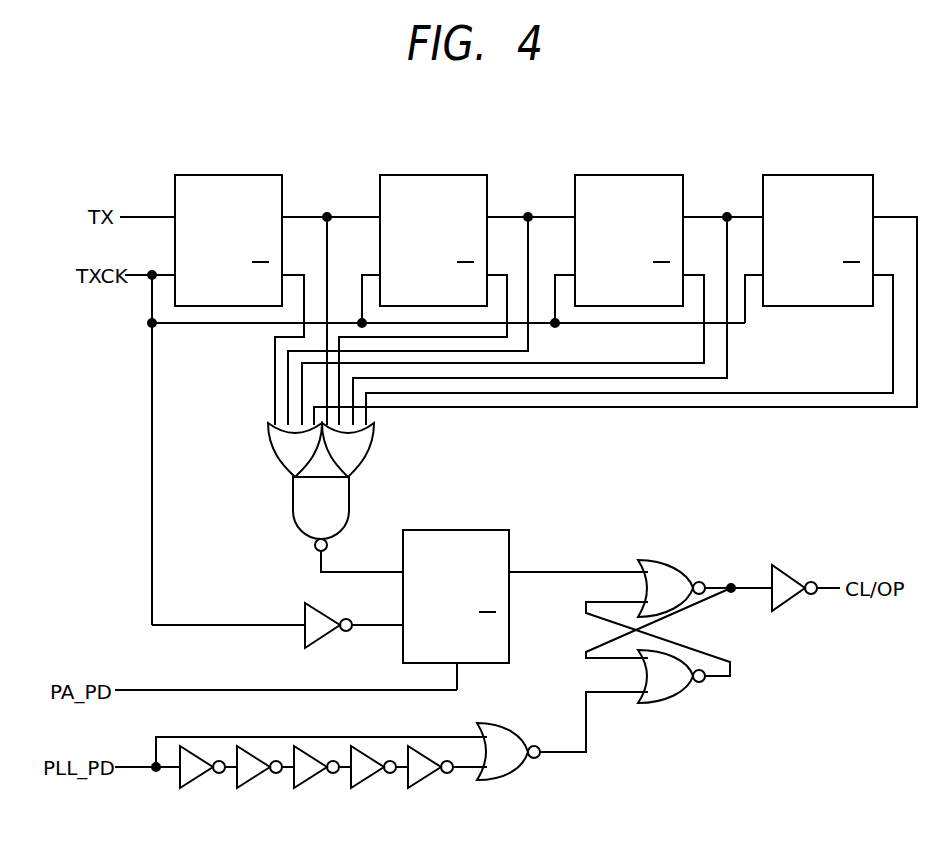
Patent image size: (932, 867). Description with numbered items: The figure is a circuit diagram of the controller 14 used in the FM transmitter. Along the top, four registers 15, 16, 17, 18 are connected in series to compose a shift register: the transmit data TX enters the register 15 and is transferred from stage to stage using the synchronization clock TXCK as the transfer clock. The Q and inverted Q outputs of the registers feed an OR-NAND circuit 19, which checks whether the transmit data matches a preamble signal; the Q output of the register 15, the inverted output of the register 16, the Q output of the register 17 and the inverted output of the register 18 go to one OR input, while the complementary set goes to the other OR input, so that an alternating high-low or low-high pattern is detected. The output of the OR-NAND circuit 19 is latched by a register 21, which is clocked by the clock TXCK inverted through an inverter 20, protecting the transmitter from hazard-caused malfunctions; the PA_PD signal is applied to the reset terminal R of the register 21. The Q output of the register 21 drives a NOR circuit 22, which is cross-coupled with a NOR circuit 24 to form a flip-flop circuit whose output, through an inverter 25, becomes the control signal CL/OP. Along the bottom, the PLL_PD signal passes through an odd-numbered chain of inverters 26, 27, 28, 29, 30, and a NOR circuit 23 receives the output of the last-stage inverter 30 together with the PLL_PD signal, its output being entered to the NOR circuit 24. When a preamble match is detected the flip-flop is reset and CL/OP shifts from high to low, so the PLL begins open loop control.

The controller 14 is at (551, 125).
The register 15 is at (247, 175).
The register 16 is at (448, 175).
The register 17 is at (645, 175).
The register 18 is at (835, 175).
The OR-NAND circuit 19 is at (304, 533).
The inverter 20 is at (322, 641).
The register 21 is at (467, 530).
The NOR circuit 22 is at (668, 560).
The NOR circuit 23 is at (508, 723).
The NOR circuit 24 is at (668, 703).
The inverter 25 is at (790, 607).
The inverter 26 is at (196, 788).
The inverter 27 is at (253, 788).
The inverter 28 is at (310, 788).
The inverter 29 is at (367, 788).
The inverter 30 is at (424, 788).